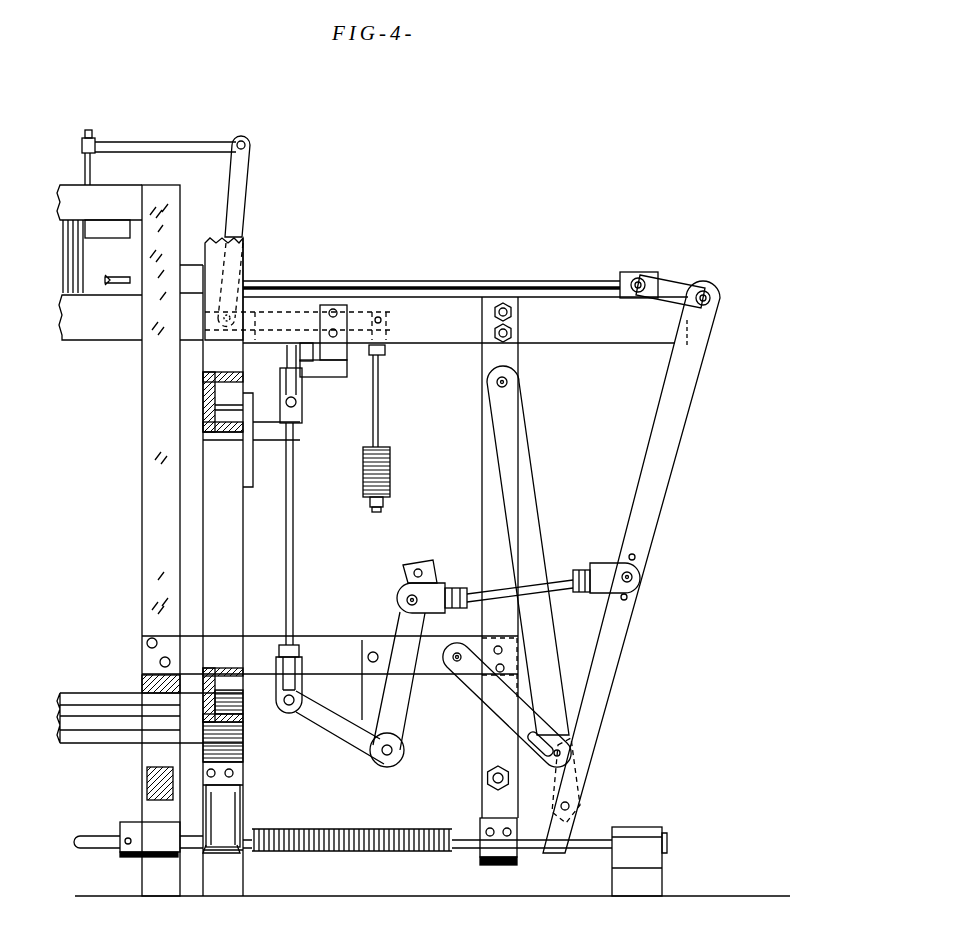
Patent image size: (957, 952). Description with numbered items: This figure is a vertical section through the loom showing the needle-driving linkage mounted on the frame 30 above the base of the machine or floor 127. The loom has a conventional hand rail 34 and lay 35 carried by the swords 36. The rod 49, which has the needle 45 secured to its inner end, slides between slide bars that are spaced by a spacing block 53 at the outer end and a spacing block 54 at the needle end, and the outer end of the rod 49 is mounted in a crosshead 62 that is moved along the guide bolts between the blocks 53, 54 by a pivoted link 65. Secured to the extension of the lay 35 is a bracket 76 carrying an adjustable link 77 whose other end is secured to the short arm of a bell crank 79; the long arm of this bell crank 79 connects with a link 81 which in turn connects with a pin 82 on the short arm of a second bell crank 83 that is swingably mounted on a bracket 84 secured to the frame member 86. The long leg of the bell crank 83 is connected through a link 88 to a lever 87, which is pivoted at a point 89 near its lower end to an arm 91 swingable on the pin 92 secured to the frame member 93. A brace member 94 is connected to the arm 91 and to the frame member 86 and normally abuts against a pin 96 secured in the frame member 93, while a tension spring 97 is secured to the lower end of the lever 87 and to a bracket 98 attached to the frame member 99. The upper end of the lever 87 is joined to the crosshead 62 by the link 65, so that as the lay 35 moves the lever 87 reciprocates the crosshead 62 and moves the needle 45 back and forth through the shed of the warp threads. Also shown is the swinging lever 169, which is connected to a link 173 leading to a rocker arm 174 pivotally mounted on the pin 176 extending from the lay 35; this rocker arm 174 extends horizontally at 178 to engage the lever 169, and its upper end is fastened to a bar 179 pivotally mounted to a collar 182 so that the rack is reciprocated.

The collar 182 is at (80, 147).
The bar 179 is at (152, 144).
The hand rail 34 is at (112, 194).
The rocker arm 174 is at (241, 214).
The spacing block 54 is at (190, 262).
The pin 176 is at (248, 273).
The horizontal extension 178 is at (360, 300).
The rod 49 is at (478, 283).
The crosshead 62 is at (625, 275).
The spacing block 53 is at (665, 273).
The link 65 is at (690, 283).
The needle 45 is at (110, 277).
The lay 35 is at (95, 333).
The swords 36 is at (148, 438).
The adjustable link 77 is at (305, 383).
The bracket 76 is at (342, 380).
The link 173 is at (378, 393).
The pin 92 is at (508, 382).
The swinging lever 169 is at (390, 470).
The bell crank 79 is at (275, 443).
The arm 91 is at (523, 493).
The frame member 93 is at (488, 515).
The link 81 is at (288, 535).
The link 88 is at (547, 580).
The frame 30 is at (235, 612).
The frame member 86 is at (335, 645).
The lever 87 is at (612, 667).
The bracket 84 is at (373, 687).
The pin 82 is at (288, 701).
The brace member 94 is at (492, 702).
The bell crank 83 is at (345, 732).
The frame member 99 is at (242, 743).
The pin 96 is at (488, 782).
The pivot point 89 is at (570, 805).
The bracket 98 is at (222, 817).
The tension spring 97 is at (343, 862).
The floor 127 is at (188, 897).